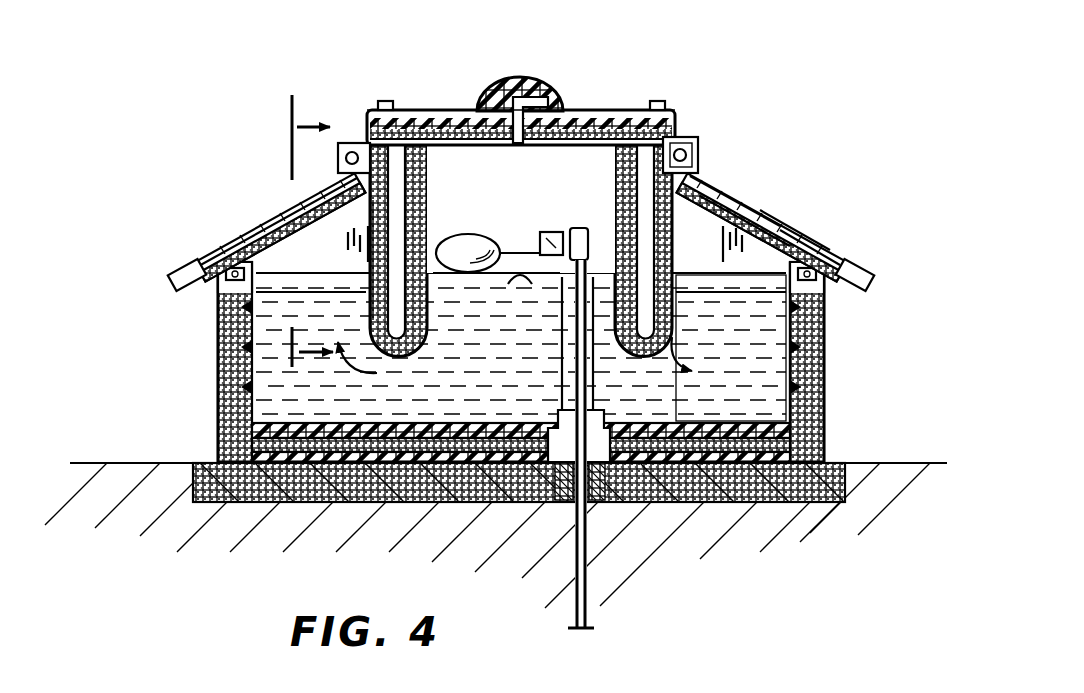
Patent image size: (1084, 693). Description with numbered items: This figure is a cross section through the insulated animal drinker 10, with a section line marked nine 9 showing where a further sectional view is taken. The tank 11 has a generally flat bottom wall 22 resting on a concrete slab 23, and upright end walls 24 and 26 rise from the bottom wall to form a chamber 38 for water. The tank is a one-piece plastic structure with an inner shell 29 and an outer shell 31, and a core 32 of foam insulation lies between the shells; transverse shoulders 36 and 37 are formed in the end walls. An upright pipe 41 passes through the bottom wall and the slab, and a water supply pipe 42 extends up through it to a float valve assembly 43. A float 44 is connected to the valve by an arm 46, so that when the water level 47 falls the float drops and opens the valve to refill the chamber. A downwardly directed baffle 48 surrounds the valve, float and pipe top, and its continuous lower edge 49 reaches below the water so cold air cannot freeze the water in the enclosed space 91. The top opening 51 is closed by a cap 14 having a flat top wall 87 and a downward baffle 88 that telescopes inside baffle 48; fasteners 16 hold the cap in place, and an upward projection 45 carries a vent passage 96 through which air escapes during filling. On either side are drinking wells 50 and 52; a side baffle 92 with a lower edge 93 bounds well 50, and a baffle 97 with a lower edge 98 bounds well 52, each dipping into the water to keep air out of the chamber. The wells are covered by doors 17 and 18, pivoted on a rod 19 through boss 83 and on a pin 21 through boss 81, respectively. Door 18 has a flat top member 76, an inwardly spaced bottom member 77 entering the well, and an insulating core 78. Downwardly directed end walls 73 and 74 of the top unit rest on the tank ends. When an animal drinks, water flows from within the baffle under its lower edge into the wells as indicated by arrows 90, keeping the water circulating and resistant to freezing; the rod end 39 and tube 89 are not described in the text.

The section line 9 is at (293, 235).
The drinker 10 is at (784, 103).
The tank 11 is at (208, 401).
The cap 14 is at (605, 110).
The fasteners 16 is at (385, 100).
The door 17 is at (293, 205).
The door 18 is at (814, 238).
The rod 19 is at (358, 135).
The pin or rod 21 is at (698, 154).
The bottom wall 22 is at (386, 440).
The concrete slab 23 is at (792, 488).
The end wall 24 is at (219, 364).
The end wall 26 is at (826, 367).
The inner plastic shell 29 is at (797, 367).
The outer plastic shell 31 is at (823, 440).
The core 32 is at (814, 403).
The transverse shoulder 36 is at (222, 308).
The transverse shoulder 37 is at (826, 315).
The chamber 38 is at (476, 399).
The control rod 39 is at (607, 498).
The upright pipe 41 is at (602, 398).
The water supply pipe 42 is at (588, 610).
The float valve assembly 43 is at (552, 233).
The float 44 is at (470, 240).
The projection 45 is at (517, 85).
The arm 46 is at (510, 245).
The water level 47 is at (527, 268).
The baffle 48 is at (368, 302).
The lower edge 49 is at (731, 348).
The drinking well 50 is at (323, 254).
The top opening 51 is at (680, 137).
The drinking well 52 is at (688, 254).
The end wall 73 is at (232, 252).
The end wall 74 is at (830, 247).
The top member 76 is at (787, 230).
The bottom member 77 is at (717, 194).
The core 78 is at (737, 218).
The boss 81 is at (696, 138).
The boss 83 is at (346, 140).
The top wall 87 is at (430, 110).
The baffle 88 is at (617, 163).
The tube interior 89 is at (420, 290).
The arrows 90 is at (352, 380).
The enclosed space 91 is at (446, 184).
The side baffle 92 is at (268, 250).
The lower edge 93 is at (307, 294).
The vent passage 96 is at (550, 102).
The baffle 97 is at (807, 234).
The lower edge 98 is at (763, 294).